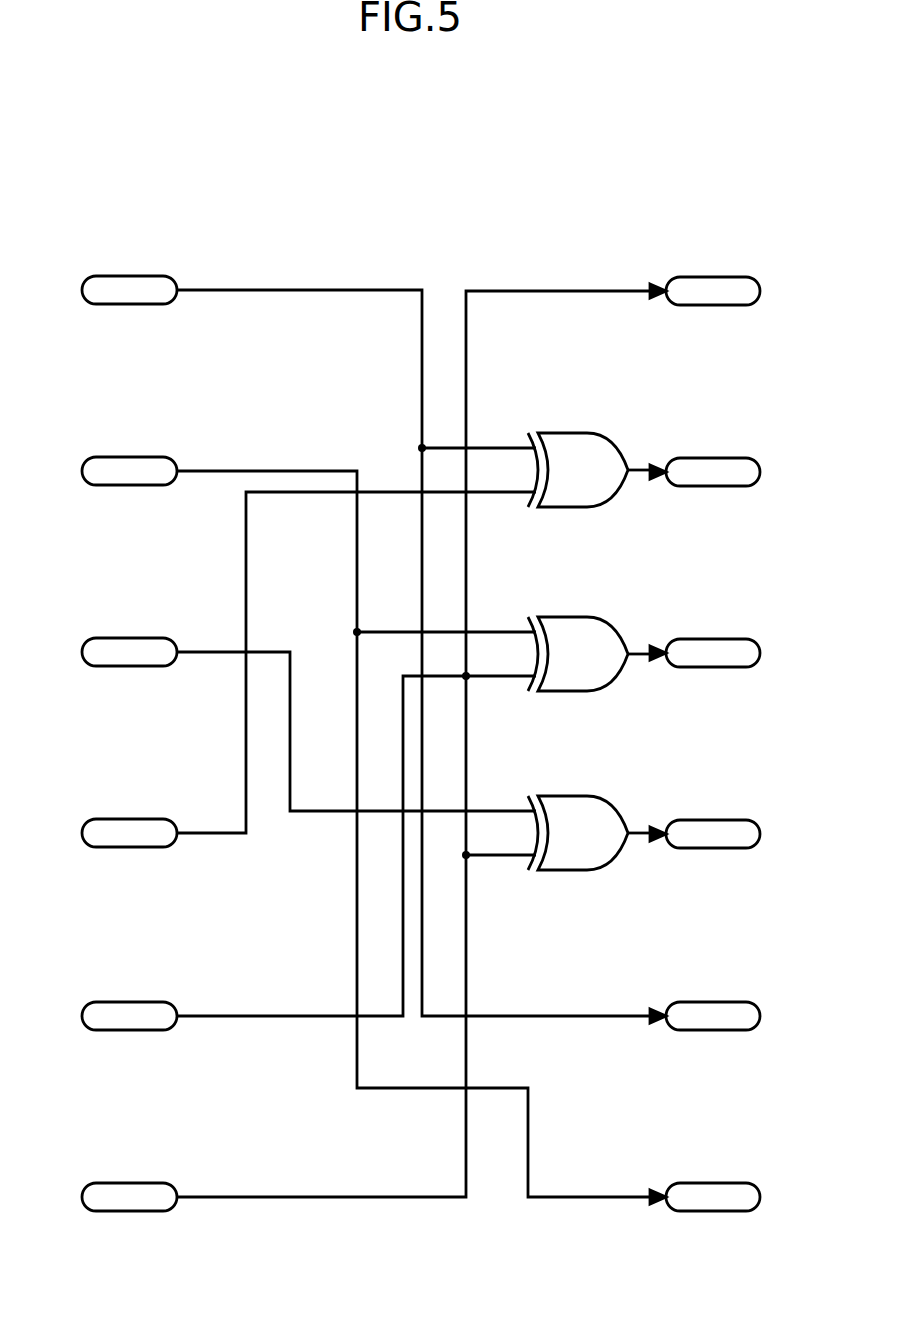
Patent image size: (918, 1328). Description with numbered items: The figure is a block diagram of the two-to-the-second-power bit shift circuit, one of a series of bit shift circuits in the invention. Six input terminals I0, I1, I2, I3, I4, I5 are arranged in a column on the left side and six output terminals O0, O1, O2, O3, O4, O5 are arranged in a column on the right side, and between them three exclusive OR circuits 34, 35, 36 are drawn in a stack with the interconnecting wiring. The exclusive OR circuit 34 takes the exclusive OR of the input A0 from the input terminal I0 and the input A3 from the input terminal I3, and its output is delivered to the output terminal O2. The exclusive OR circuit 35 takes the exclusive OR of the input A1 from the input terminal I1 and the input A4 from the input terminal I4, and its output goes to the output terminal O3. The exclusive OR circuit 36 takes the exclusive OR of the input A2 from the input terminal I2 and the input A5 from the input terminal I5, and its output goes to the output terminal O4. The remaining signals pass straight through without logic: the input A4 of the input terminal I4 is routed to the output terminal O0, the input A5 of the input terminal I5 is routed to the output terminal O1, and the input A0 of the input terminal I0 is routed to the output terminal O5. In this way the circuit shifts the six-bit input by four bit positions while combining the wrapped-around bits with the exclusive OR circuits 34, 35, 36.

The exclusive OR circuit 34 is at (590, 817).
The exclusive OR circuit 35 is at (590, 638).
The exclusive OR circuit 36 is at (590, 456).
The input terminal I0 is at (98, 1201).
The input terminal I1 is at (98, 1020).
The input terminal I2 is at (98, 837).
The input terminal I3 is at (98, 656).
The input terminal I4 is at (98, 475).
The input terminal I5 is at (98, 294).
The output terminal O0 is at (748, 1190).
The output terminal O1 is at (748, 1009).
The output terminal O2 is at (748, 827).
The output terminal O3 is at (748, 646).
The output terminal O4 is at (748, 465).
The output terminal O5 is at (748, 284).